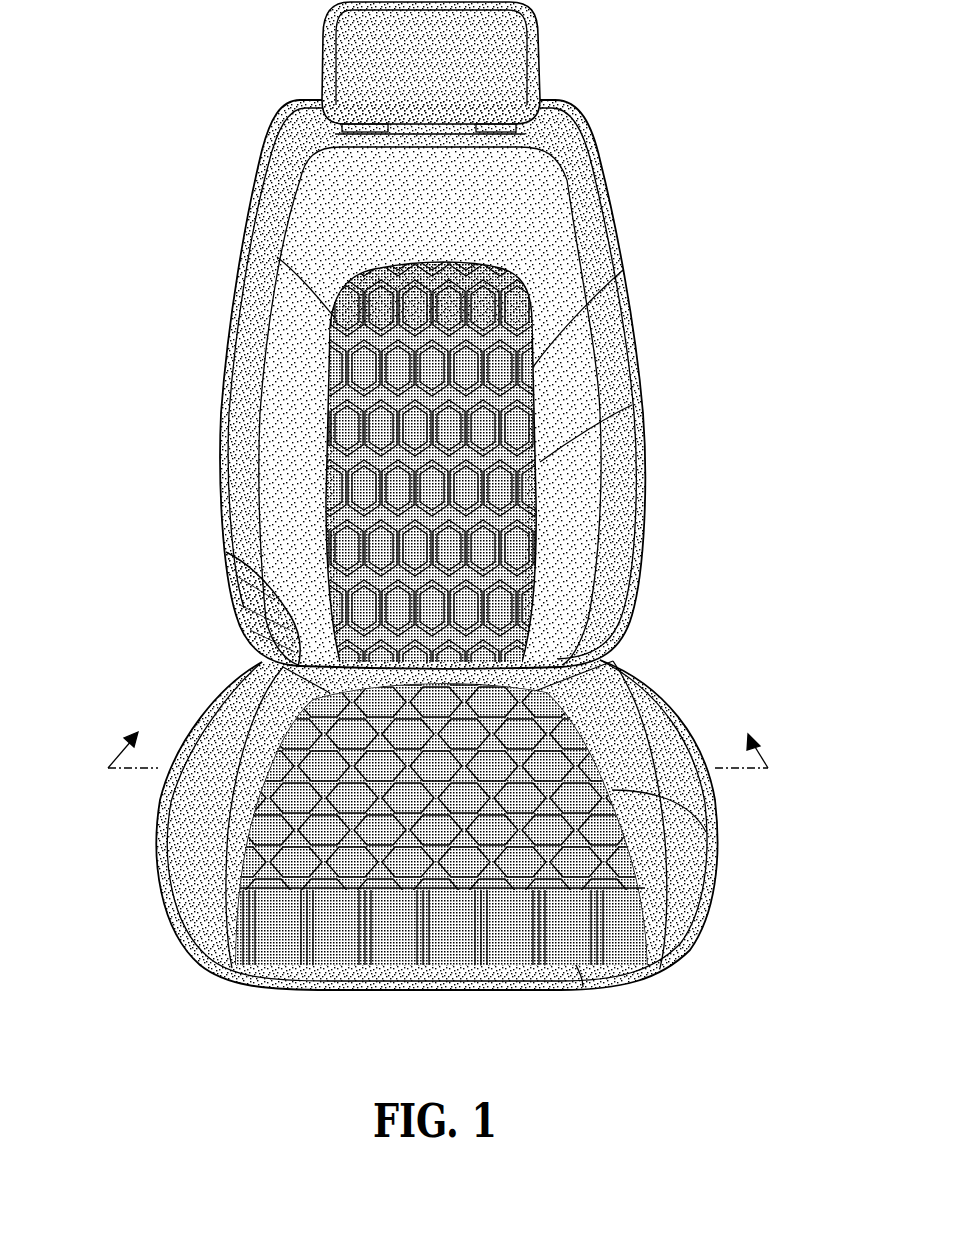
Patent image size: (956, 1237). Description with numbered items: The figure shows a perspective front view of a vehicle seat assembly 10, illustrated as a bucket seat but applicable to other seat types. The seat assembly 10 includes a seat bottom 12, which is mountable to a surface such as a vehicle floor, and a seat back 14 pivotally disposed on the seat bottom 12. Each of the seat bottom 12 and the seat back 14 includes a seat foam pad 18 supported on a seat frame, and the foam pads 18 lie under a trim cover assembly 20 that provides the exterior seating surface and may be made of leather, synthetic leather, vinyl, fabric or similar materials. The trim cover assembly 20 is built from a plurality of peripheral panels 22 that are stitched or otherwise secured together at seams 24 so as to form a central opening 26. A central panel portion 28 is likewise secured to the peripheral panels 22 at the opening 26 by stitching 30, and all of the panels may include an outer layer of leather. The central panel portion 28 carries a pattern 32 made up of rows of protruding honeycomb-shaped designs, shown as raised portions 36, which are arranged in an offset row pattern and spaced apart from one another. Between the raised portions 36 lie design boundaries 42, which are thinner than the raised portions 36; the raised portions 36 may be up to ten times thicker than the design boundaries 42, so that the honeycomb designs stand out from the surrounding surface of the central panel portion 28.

The seat assembly 10 is at (655, 106).
The seat bottom 12 is at (170, 924).
The seat back 14 is at (214, 403).
The seat foam pad 18 is at (247, 630).
The trim cover assembly 20 is at (642, 376).
The peripheral panel 22 is at (543, 193).
The seam 24 is at (608, 218).
The central opening 26 is at (625, 430).
The central panel portion 28 is at (590, 310).
The stitching 30 is at (320, 412).
The pattern 32 is at (263, 951).
The raised portion 36 is at (470, 290).
The design boundary 42 is at (400, 320).